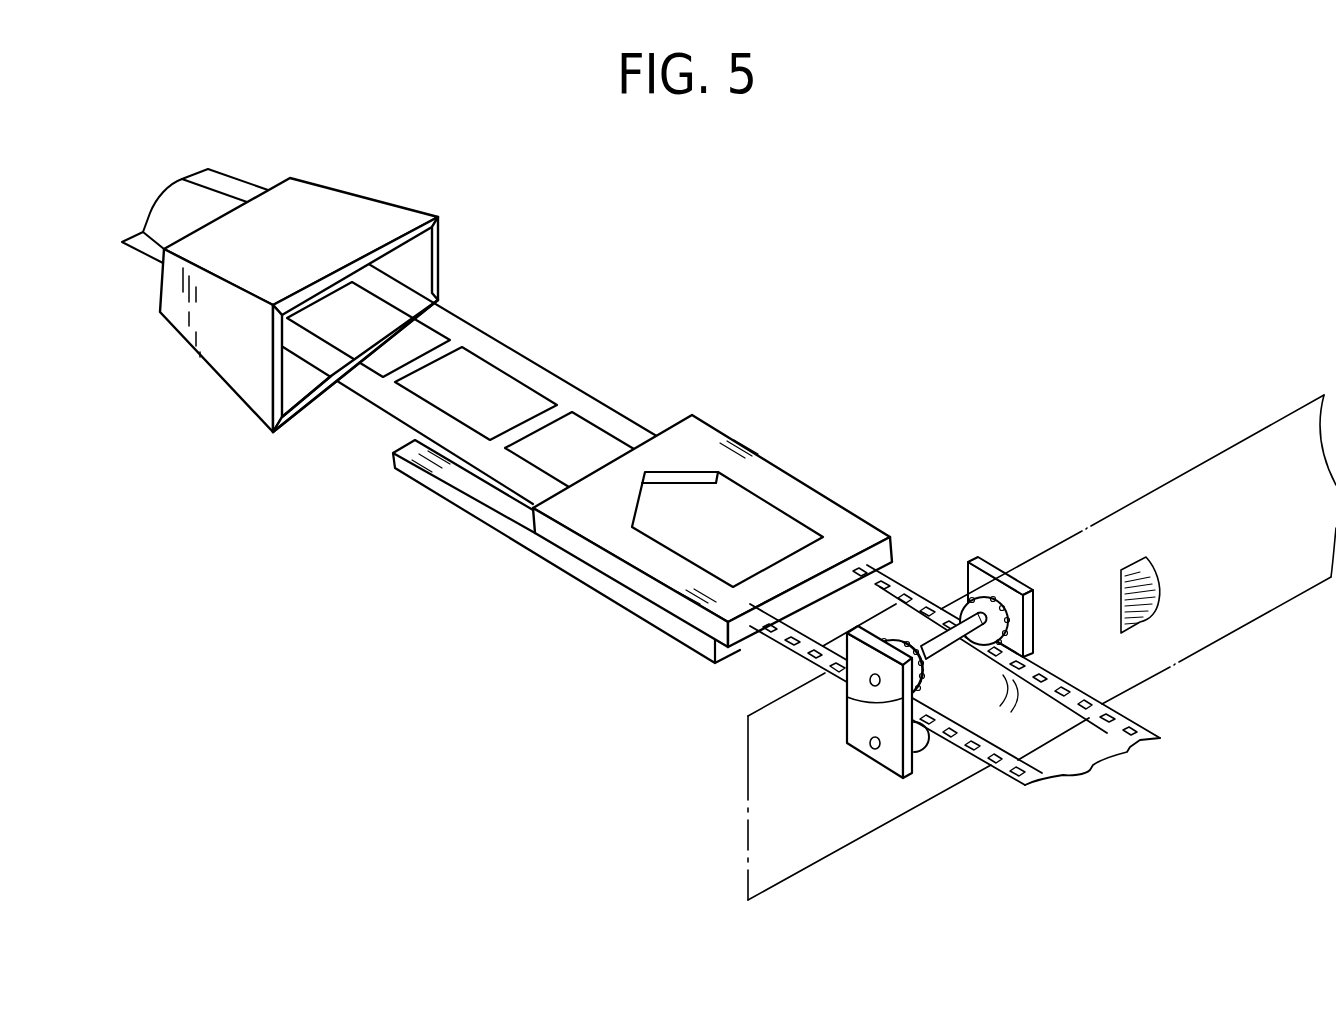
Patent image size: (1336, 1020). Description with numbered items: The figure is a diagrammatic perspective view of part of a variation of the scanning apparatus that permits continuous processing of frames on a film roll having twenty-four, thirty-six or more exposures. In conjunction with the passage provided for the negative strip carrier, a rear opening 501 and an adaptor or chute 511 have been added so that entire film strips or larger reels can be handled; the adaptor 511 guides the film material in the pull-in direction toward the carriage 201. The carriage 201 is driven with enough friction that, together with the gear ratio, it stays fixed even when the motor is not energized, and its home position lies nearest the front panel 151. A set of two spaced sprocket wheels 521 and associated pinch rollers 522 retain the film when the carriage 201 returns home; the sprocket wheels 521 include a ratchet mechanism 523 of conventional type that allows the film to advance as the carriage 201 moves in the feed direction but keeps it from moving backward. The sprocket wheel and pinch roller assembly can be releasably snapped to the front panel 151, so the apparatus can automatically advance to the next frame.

The rear opening 501 is at (387, 208).
The adaptor or chute 511 is at (705, 436).
The carriage 201 is at (457, 497).
The front panel 151 is at (1213, 468).
The sprocket wheels 521 is at (981, 561).
The pinch rollers 522 is at (933, 748).
The ratchet mechanism 523 is at (846, 686).